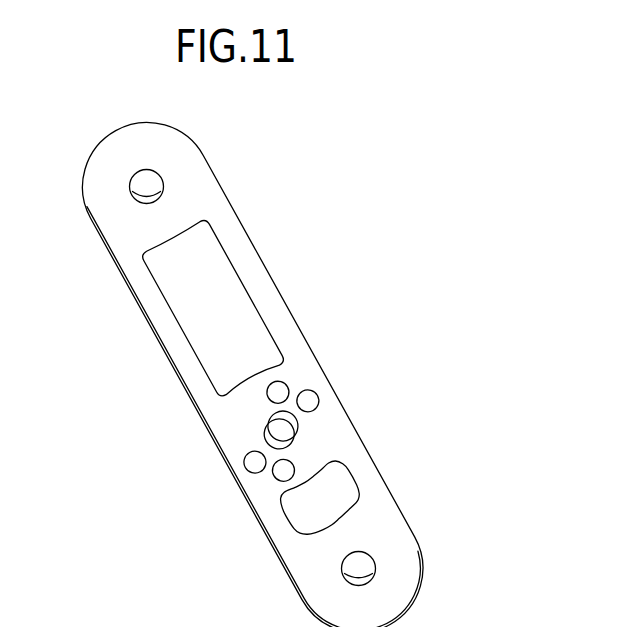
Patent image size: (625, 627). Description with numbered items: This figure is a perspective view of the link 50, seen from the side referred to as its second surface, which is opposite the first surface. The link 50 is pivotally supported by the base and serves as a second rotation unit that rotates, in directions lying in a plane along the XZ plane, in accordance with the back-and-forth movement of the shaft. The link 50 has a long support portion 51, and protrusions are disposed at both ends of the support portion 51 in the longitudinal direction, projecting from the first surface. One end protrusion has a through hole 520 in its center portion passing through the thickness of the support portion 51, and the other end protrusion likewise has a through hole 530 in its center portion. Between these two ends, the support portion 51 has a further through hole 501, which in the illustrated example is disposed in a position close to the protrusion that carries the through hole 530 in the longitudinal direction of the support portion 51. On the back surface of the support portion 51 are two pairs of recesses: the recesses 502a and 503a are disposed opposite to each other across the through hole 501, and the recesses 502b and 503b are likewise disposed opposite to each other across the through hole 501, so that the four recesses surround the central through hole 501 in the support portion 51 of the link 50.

The link 50 is at (97, 296).
The support portion 51 is at (237, 420).
The through hole 520 is at (150, 180).
The through hole 530 is at (360, 570).
The through hole 501 is at (292, 422).
The recess 502a is at (309, 396).
The recess 502b is at (282, 378).
The recess 503a is at (253, 460).
The recess 503b is at (280, 474).